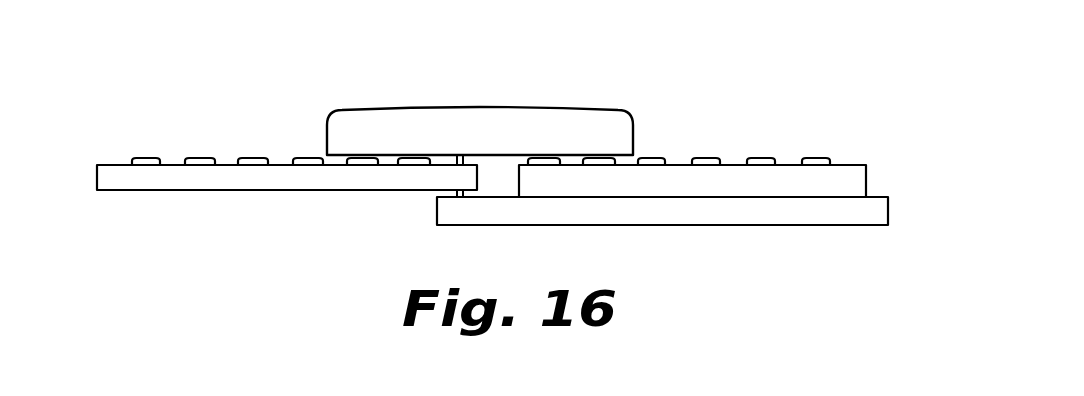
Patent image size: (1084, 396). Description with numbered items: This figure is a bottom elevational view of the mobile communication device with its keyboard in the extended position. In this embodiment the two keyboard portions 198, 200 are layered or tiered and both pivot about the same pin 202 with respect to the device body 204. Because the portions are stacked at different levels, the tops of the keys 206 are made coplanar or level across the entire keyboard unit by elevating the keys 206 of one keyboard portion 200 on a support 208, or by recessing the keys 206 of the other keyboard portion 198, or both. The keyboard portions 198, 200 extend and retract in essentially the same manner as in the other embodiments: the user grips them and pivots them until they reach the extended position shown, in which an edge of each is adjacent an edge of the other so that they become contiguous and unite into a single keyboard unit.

The keyboard portion 198 is at (220, 191).
The keyboard portion 200 is at (855, 225).
The pin 202 is at (455, 193).
The device body 204 is at (600, 109).
The keys 206 is at (317, 158).
The support 208 is at (868, 176).